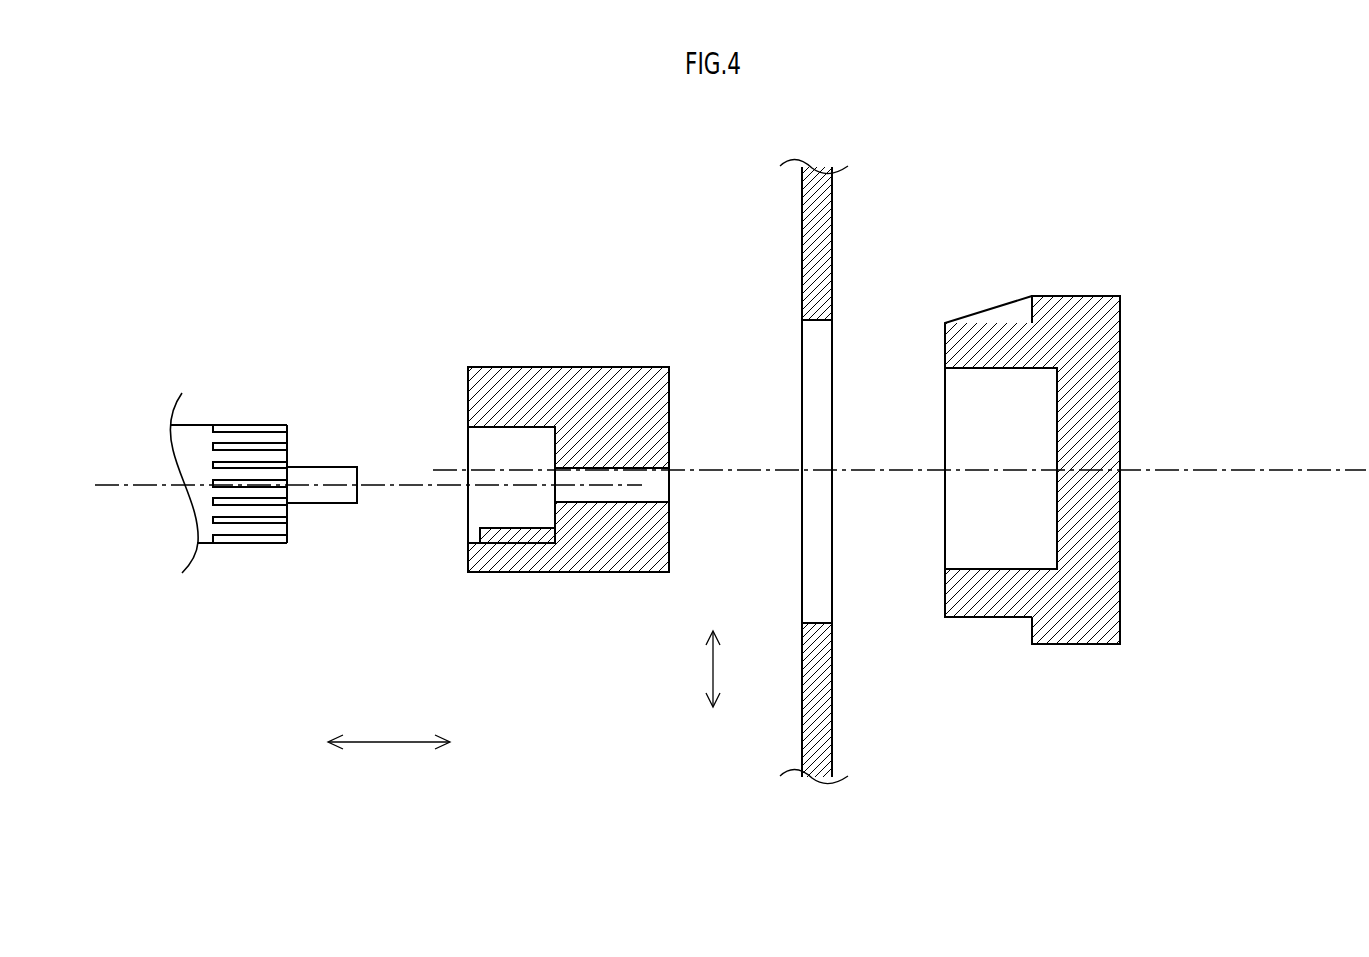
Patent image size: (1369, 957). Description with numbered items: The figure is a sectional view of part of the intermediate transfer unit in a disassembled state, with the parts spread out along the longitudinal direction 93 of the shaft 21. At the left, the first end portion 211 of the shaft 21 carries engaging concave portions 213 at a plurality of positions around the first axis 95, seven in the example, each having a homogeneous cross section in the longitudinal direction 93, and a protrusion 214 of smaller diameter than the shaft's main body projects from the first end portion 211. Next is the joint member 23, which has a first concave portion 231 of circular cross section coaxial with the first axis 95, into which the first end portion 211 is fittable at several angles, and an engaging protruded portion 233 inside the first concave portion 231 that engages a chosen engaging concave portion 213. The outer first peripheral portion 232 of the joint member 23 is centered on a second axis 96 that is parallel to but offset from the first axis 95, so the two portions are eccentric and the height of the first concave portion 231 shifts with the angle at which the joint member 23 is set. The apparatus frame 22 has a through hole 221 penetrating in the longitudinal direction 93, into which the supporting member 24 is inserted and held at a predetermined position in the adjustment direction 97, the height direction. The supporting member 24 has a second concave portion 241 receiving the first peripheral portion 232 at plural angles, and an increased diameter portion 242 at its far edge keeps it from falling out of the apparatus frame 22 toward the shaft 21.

The shaft 21 is at (228, 444).
The first end portion 211 is at (205, 537).
The engaging concave portion 213 is at (258, 430).
The protrusion 214 is at (330, 497).
The apparatus frame 22 is at (848, 471).
The through hole 221 is at (834, 341).
The joint member 23 is at (532, 455).
The first concave portion 231 is at (478, 502).
The first peripheral portion 232 is at (630, 367).
The engaging protruded portion 233 is at (532, 528).
The supporting member 24 is at (998, 433).
The second concave portion 241 is at (948, 531).
The increased diameter portion 242 is at (1071, 296).
The longitudinal direction 93 is at (389, 728).
The first axis 95 is at (118, 485).
The second axis 96 is at (1282, 465).
The adjustment direction 97 is at (727, 669).